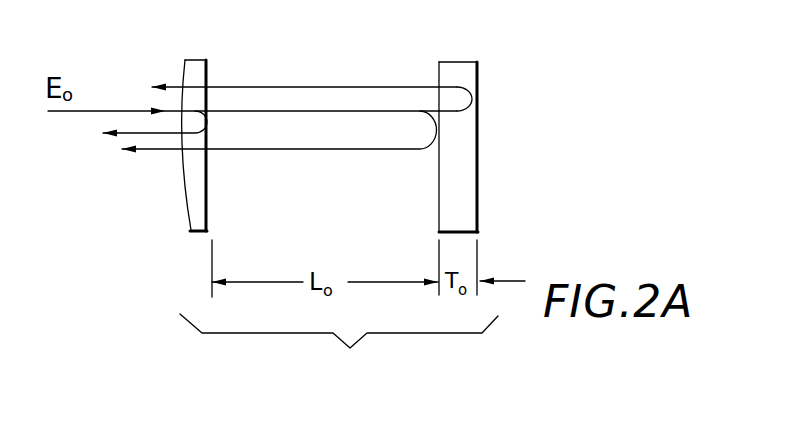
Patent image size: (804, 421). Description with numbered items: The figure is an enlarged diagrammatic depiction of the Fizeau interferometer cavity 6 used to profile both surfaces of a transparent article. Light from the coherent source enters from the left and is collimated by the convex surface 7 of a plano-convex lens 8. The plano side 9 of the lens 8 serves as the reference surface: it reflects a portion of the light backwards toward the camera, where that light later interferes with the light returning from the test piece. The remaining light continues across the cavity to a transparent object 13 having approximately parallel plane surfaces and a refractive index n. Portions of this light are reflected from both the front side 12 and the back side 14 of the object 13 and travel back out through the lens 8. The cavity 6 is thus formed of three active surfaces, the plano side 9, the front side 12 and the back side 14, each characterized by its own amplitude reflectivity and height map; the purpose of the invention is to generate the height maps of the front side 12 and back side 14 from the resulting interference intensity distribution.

The Fizeau interferometer cavity 6 is at (339, 348).
The convex surface 7 is at (180, 72).
The plano-convex lens 8 is at (182, 149).
The plano side 9 is at (212, 67).
The front side 12 is at (431, 70).
The transparent object 13 is at (461, 125).
The back side 14 is at (483, 70).